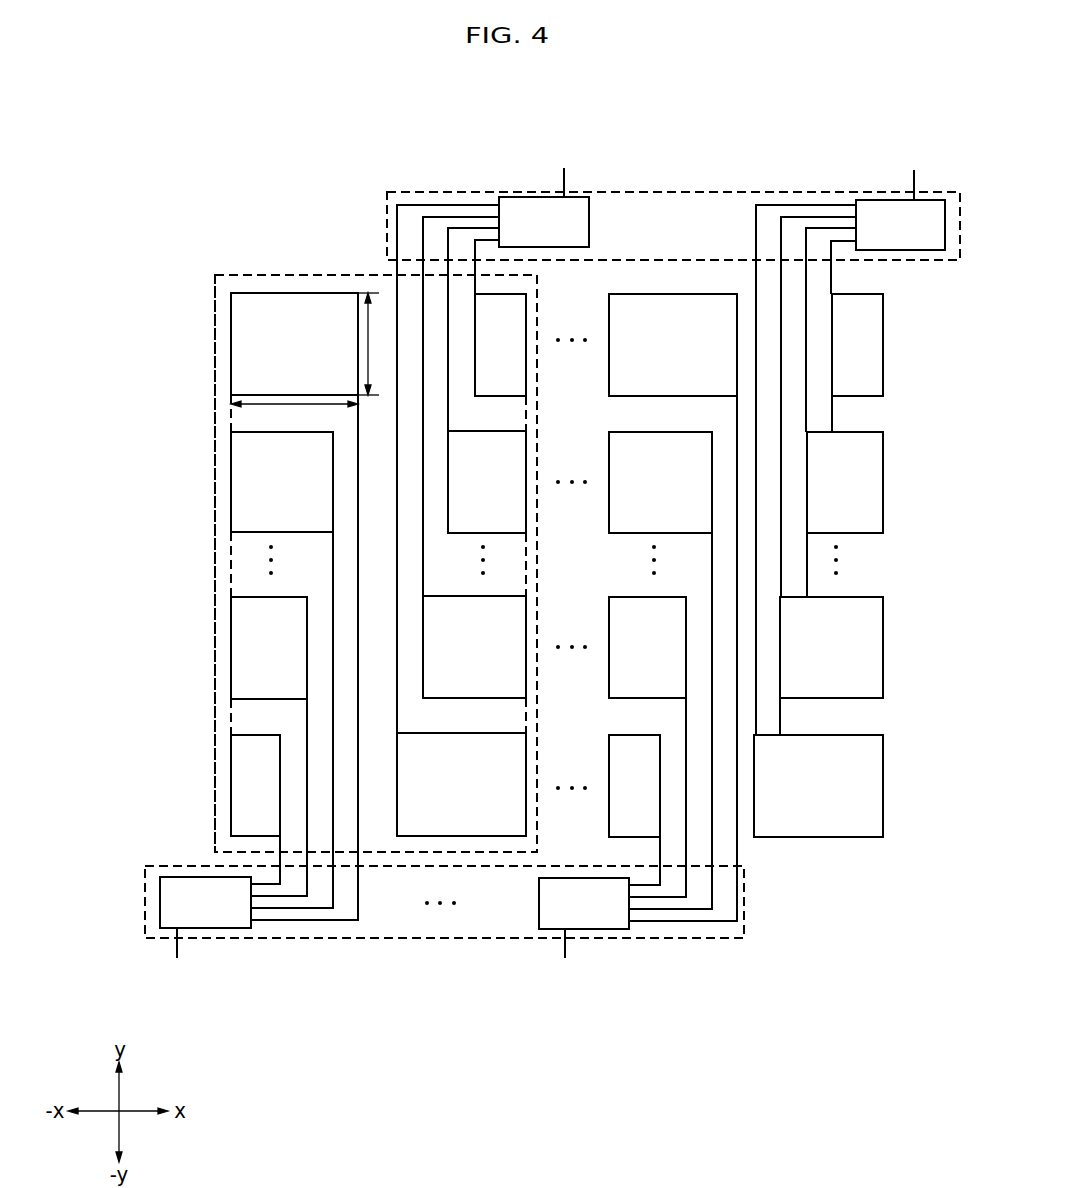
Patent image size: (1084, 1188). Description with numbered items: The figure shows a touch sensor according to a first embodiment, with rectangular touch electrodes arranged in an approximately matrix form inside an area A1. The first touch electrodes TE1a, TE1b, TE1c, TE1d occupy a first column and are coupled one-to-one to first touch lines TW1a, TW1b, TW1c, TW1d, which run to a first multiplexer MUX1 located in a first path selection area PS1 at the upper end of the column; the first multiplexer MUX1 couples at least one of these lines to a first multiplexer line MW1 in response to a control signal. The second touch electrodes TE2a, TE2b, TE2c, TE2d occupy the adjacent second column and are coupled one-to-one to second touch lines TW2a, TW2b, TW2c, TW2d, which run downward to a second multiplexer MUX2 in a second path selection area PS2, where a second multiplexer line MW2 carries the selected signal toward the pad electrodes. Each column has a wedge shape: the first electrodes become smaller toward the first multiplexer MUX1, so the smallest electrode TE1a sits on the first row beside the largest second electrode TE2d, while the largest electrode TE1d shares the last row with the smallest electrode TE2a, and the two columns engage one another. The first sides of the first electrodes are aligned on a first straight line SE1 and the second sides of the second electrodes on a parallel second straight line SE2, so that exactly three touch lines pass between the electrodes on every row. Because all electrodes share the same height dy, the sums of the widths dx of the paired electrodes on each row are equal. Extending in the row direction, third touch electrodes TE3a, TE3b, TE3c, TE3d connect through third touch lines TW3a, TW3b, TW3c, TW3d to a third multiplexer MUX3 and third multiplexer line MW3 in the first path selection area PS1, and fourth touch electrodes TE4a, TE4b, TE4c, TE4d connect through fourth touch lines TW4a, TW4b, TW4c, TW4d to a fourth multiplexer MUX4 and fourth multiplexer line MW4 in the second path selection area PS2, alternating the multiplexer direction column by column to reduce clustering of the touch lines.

The first path selection area PS1 is at (387, 226).
The second path selection area PS2 is at (744, 897).
The area A1 is at (215, 368).
The first multiplexer MUX1 is at (522, 235).
The second multiplexer MUX2 is at (183, 910).
The third multiplexer MUX3 is at (878, 238).
The fourth multiplexer MUX4 is at (562, 911).
The first multiplexer line MW1 is at (563, 170).
The second multiplexer line MW2 is at (177, 960).
The third multiplexer line MW3 is at (913, 172).
The fourth multiplexer line MW4 is at (570, 961).
The first touch line TW1a is at (492, 240).
The first touch line TW1b is at (473, 228).
The first touch line TW1c is at (440, 217).
The first touch line TW1d is at (413, 205).
The second touch line TW2a is at (262, 885).
The second touch line TW2b is at (277, 897).
The second touch line TW2c is at (303, 908).
The second touch line TW2d is at (337, 921).
The third touch line TW3a is at (848, 241).
The third touch line TW3b is at (832, 228).
The third touch line TW3c is at (795, 217).
The third touch line TW3d is at (770, 205).
The fourth touch line TW4a is at (640, 885).
The fourth touch line TW4b is at (655, 897).
The fourth touch line TW4c is at (680, 909).
The fourth touch line TW4d is at (717, 921).
The first touch electrode TE1a is at (480, 354).
The first touch electrode TE1b is at (466, 497).
The first touch electrode TE1c is at (454, 661).
The first touch electrode TE1d is at (440, 792).
The second touch electrode TE2a is at (235, 797).
The second touch electrode TE2b is at (247, 656).
The second touch electrode TE2c is at (260, 494).
The second touch electrode TE2d is at (268, 357).
The third touch electrode TE3a is at (837, 354).
The third touch electrode TE3b is at (824, 497).
The third touch electrode TE3c is at (810, 661).
The third touch electrode TE3d is at (797, 797).
The fourth touch electrode TE4a is at (614, 797).
The fourth touch electrode TE4b is at (626, 661).
The fourth touch electrode TE4c is at (639, 497).
The fourth touch electrode TE4d is at (651, 354).
The first straight line SE1 is at (526, 563).
The second straight line SE2 is at (231, 565).
The width dx is at (294, 415).
The height dy is at (376, 344).